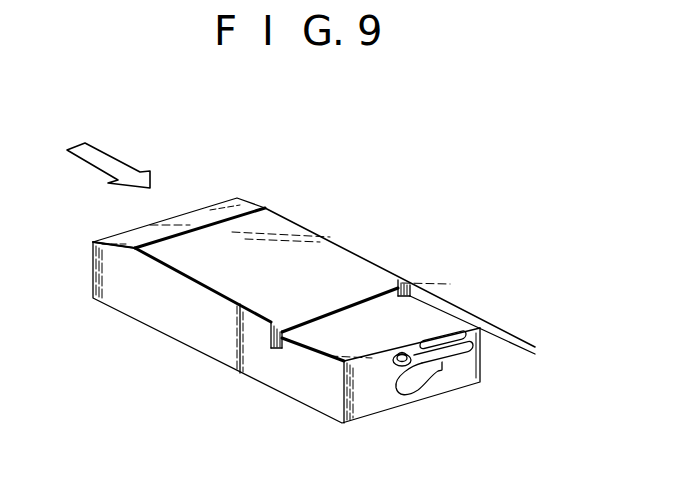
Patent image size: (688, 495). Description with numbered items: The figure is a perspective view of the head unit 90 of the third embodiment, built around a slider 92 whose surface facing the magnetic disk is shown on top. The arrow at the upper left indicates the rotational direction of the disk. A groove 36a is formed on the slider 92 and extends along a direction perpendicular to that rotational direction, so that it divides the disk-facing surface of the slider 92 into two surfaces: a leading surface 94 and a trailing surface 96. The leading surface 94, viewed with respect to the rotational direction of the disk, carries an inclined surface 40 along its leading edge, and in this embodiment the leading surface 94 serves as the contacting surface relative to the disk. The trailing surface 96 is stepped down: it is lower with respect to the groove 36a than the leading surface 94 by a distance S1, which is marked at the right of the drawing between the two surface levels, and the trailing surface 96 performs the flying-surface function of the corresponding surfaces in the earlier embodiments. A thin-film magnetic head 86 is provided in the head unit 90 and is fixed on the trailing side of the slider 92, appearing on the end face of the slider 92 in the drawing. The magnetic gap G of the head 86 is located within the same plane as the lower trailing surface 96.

The head unit 90 is at (301, 201).
The inclined surface 40 is at (195, 215).
The leading surface 94 is at (335, 252).
The groove 36a is at (402, 277).
The slider 92 is at (185, 332).
The trailing surface 96 is at (438, 313).
The distance S1 is at (517, 378).
The thin-film magnetic head 86 is at (387, 372).
The magnetic gap G is at (401, 352).